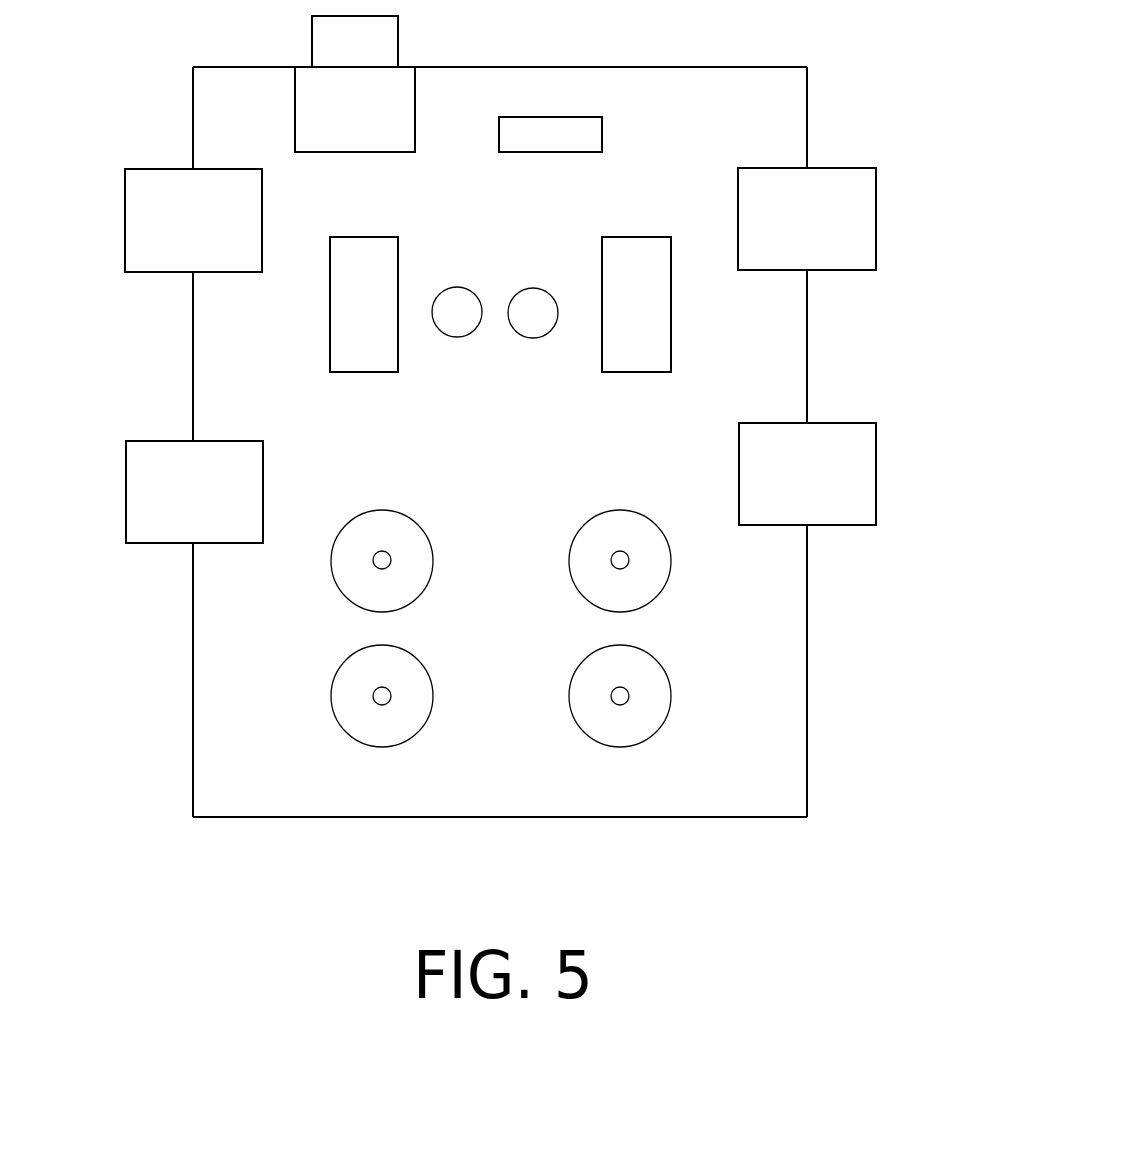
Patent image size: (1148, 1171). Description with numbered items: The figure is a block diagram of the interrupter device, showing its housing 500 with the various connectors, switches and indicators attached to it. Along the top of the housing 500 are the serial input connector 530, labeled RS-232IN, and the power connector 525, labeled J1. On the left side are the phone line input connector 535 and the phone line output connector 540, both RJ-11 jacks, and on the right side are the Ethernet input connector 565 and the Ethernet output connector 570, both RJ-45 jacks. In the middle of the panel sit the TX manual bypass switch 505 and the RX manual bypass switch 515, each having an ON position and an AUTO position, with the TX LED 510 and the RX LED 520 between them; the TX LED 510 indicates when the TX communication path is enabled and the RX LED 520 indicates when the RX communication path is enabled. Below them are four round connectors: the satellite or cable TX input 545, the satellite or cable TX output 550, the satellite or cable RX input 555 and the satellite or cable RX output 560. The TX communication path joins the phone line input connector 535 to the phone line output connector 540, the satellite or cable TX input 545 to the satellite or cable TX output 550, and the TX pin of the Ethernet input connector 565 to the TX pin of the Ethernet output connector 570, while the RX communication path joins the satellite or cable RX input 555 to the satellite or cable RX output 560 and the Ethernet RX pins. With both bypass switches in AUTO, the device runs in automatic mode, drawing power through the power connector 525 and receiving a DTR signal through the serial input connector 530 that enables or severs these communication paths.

The housing 500 is at (778, 790).
The TX manual bypass switch 505 is at (365, 372).
The TX light emitting diode 510 is at (457, 287).
The RX manual bypass switch 515 is at (602, 355).
The RX LED 520 is at (528, 288).
The power connector 525 is at (602, 134).
The serial input connector 530 is at (398, 42).
The phone line input connector 535 is at (158, 169).
The phone line output connector 540 is at (159, 543).
The satellite or cable TX input connector 545 is at (332, 558).
The satellite or cable TX output connector 550 is at (332, 695).
The satellite or cable RX input connector 555 is at (569, 560).
The satellite or cable RX output connector 560 is at (569, 697).
The Ethernet input connector 565 is at (843, 168).
The Ethernet output connector 570 is at (842, 423).